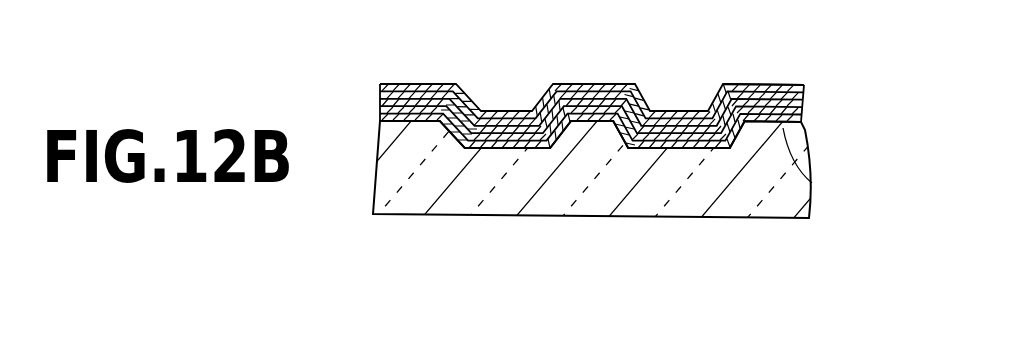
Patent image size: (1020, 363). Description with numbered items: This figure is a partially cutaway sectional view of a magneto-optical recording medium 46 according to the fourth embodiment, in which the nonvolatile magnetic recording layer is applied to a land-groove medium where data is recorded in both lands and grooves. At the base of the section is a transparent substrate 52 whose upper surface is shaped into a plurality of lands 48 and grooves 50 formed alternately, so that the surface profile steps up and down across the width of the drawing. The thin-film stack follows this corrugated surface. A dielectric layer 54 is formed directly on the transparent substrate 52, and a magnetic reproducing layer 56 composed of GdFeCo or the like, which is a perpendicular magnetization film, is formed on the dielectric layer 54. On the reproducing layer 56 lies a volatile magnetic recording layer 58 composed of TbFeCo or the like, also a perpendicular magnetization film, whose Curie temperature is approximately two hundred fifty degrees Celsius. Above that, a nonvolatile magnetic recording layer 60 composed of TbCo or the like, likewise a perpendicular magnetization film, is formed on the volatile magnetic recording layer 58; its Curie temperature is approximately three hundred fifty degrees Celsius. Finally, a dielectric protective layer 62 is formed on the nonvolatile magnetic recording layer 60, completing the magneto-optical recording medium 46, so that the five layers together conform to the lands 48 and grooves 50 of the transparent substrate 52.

The magneto-optical recording medium 46 is at (627, 164).
The lands 48 is at (417, 84).
The grooves 50 is at (503, 111).
The transparent substrate 52 is at (598, 202).
The dielectric layer 54 is at (782, 127).
The magnetic reproducing layer 56 is at (805, 114).
The volatile magnetic recording layer 58 is at (805, 105).
The nonvolatile magnetic recording layer 60 is at (803, 94).
The dielectric protective layer 62 is at (785, 87).